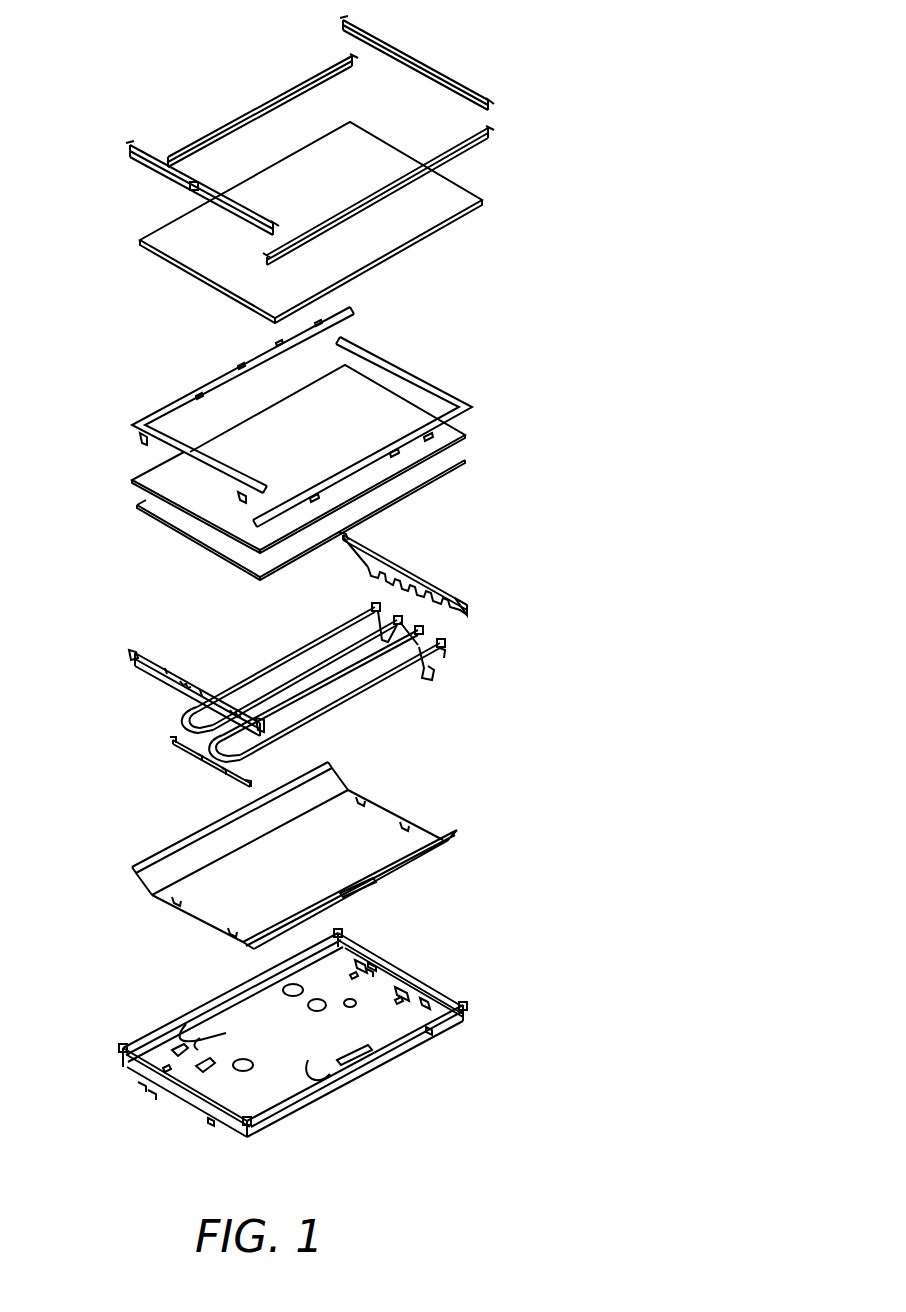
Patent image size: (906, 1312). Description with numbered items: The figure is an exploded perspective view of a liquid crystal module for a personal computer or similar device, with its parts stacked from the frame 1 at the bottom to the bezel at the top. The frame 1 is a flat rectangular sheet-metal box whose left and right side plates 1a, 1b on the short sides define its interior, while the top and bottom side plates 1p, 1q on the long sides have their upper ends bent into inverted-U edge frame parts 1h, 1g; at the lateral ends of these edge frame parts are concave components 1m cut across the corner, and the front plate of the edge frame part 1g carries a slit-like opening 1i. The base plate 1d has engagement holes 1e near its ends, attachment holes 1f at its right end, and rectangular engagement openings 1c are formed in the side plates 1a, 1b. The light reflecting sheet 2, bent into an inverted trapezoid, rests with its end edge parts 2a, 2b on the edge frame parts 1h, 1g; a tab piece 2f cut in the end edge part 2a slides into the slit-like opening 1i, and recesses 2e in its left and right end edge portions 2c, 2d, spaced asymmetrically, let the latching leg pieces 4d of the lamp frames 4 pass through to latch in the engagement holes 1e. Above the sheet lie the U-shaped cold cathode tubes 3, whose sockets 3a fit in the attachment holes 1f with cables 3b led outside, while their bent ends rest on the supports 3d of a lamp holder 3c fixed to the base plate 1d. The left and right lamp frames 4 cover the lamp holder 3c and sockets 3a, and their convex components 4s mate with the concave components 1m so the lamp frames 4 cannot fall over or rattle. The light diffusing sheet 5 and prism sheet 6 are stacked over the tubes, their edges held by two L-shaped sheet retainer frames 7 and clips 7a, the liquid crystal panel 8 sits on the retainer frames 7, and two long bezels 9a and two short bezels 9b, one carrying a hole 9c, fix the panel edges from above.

The frame 1 is at (296, 1037).
The left side plate 1a is at (168, 1106).
The right side plate 1b is at (422, 982).
The engagement opening 1c is at (392, 975).
The base plate 1d is at (228, 1032).
The engagement hole 1e is at (436, 1030).
The attachment hole 1f is at (440, 1000).
The edge frame part 1g is at (322, 1102).
The edge frame part 1h is at (154, 1032).
The slit-like opening 1i is at (376, 1074).
The concave component 1m is at (342, 932).
The top side plate 1p is at (207, 1037).
The bottom side plate 1q is at (314, 1063).
The light reflecting sheet 2 is at (301, 854).
The end edge part 2a is at (444, 842).
The end edge part 2b is at (158, 853).
The left end edge portion 2c is at (198, 920).
The right end edge portion 2d is at (388, 815).
The recess 2e is at (366, 800).
The tab piece 2f is at (366, 886).
The cold cathode tube 3 is at (282, 662).
The socket 3a is at (450, 645).
The cable 3b is at (438, 670).
The lamp holder 3c is at (226, 773).
The support 3d is at (200, 758).
The lamp frame 4 is at (430, 578).
The latching leg piece 4d is at (374, 582).
The convex component 4s is at (355, 536).
The light diffusing sheet 5 is at (172, 520).
The prism sheet 6 is at (142, 477).
The sheet retainer frame 7 is at (218, 378).
The frame clip 7a is at (140, 440).
The liquid crystal panel 8 is at (412, 231).
The long bezel 9a is at (248, 112).
The short bezel 9b is at (428, 60).
The bezel hole 9c is at (188, 190).